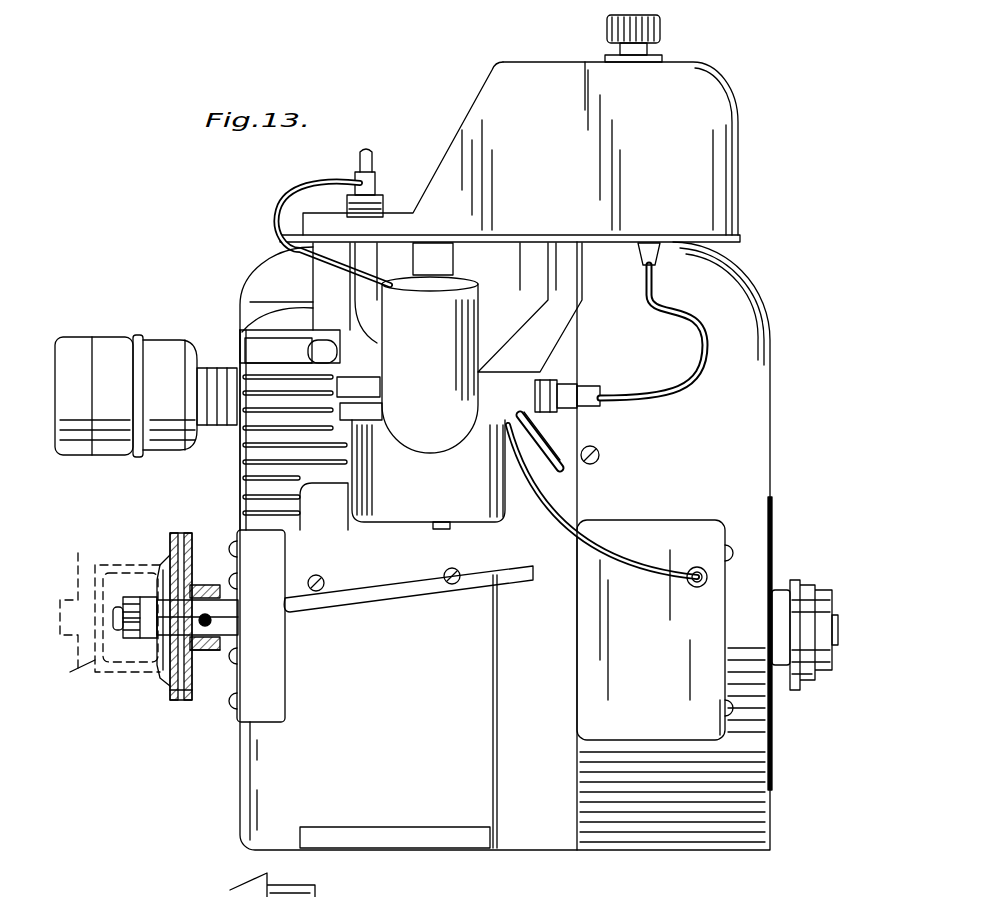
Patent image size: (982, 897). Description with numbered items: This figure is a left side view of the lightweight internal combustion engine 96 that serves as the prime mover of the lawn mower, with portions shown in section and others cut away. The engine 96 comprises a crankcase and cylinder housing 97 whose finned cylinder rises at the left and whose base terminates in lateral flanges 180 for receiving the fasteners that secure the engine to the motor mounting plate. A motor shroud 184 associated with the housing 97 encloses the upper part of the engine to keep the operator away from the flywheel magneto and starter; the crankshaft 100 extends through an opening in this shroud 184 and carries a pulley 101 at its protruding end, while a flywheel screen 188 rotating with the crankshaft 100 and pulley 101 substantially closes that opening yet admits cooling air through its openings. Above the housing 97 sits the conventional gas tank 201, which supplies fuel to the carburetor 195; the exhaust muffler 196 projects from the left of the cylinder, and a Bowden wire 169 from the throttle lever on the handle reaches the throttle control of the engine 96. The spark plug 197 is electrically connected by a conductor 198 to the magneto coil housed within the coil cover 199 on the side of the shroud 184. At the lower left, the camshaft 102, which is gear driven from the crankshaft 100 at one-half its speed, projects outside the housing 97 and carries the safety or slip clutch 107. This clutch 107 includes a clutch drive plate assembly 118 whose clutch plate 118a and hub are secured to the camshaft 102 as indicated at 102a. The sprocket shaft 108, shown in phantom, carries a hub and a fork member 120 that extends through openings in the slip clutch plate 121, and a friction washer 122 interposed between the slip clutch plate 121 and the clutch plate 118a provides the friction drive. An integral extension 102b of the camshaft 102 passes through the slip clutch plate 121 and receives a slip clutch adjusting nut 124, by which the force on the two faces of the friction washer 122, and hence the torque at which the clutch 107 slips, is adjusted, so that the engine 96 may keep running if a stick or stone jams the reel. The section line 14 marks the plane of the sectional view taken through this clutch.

The gas tank 201 is at (542, 80).
The conductor 198 is at (306, 180).
The spark plug 197 is at (378, 190).
The exhaust muffler 196 is at (117, 345).
The crankcase and cylinder housing 97 is at (272, 350).
The motor shroud 184 is at (762, 402).
The Bowden wire 169 is at (552, 447).
The carburetor 195 is at (380, 510).
The internal combustion engine 96 is at (415, 702).
The lateral flanges 180 is at (392, 825).
The coil cover 199 is at (655, 745).
The flywheel screen 188 is at (774, 738).
The pulley 101 is at (805, 585).
The crankshaft 100 is at (840, 658).
The camshaft 102 is at (233, 644).
The securing point of clutch drive plate hub on camshaft 102a is at (211, 620).
The integral extension of camshaft 102b is at (158, 646).
The safety clutch 107 is at (139, 559).
The sprocket shaft 108 is at (109, 607).
The clutch drive plate assembly 118 is at (206, 585).
The clutch plate 118a is at (194, 685).
The slip clutch adjusting nut 124 is at (151, 598).
The fork member 120 is at (76, 679).
The slip clutch plate 121 is at (165, 680).
The friction washer 122 is at (181, 701).
The section line 14 is at (216, 536).